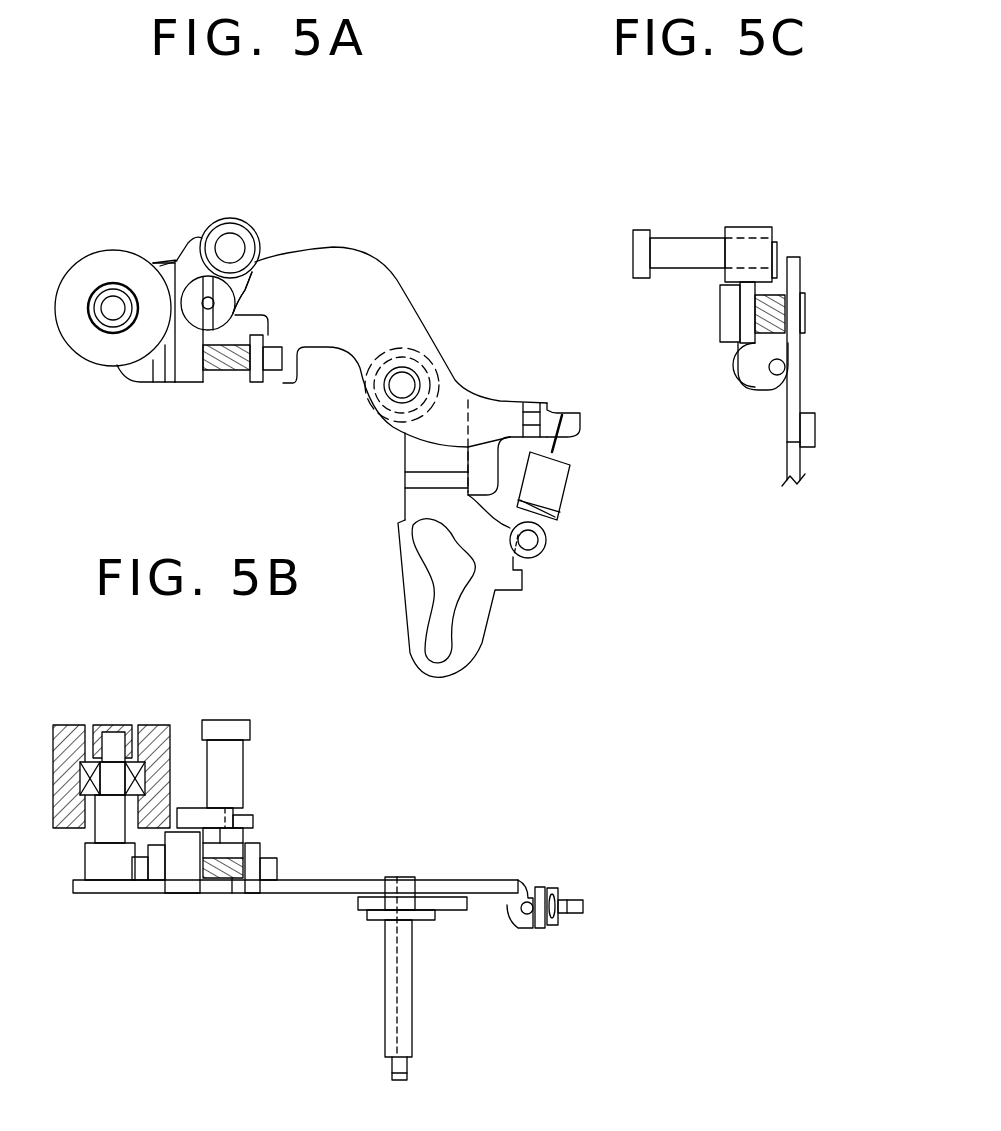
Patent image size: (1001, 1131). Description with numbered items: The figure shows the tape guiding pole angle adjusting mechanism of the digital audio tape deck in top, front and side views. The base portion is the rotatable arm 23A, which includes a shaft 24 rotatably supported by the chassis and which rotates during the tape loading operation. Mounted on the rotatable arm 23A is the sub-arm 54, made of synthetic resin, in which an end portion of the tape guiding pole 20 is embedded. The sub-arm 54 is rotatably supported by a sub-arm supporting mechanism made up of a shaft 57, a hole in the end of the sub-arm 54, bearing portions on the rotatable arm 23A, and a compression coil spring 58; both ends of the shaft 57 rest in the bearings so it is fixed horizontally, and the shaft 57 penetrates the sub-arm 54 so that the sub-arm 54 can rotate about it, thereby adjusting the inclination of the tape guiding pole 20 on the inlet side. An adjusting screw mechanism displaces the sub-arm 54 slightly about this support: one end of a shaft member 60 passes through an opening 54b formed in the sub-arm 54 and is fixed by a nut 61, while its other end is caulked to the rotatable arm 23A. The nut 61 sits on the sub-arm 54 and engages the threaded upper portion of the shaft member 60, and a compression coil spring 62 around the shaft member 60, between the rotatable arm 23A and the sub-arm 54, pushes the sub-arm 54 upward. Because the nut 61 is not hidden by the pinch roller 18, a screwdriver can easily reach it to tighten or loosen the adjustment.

In FIG. 5A, the pinch roller 18 is at (82, 273).
In FIG. 5B, the pinch roller 18 is at (70, 740).
In FIG. 5A, the tape guiding pole 20 is at (250, 220).
In FIG. 5B, the tape guiding pole 20 is at (240, 720).
In FIG. 5C, the tape guiding pole 20 is at (652, 218).
In FIG. 5A, the rotatable arm 23A is at (397, 280).
In FIG. 5B, the rotatable arm 23A is at (443, 880).
In FIG. 5C, the rotatable arm 23A is at (787, 457).
In FIG. 5B, the shaft 24 is at (402, 1017).
In FIG. 5A, the sub-arm 54 is at (188, 247).
In FIG. 5B, the sub-arm 54 is at (180, 880).
In FIG. 5C, the sub-arm 54 is at (748, 373).
In FIG. 5A, the opening 54b is at (172, 260).
In FIG. 5A, the shaft 57 is at (273, 358).
In FIG. 5B, the shaft 57 is at (268, 867).
In FIG. 5C, the shaft 57 is at (785, 367).
In FIG. 5A, the compression coil spring 58 is at (230, 367).
In FIG. 5B, the compression coil spring 58 is at (232, 883).
In FIG. 5A, the shaft member 60 is at (208, 310).
In FIG. 5C, the shaft member 60 is at (775, 250).
In FIG. 5A, the nut 61 is at (230, 298).
In FIG. 5B, the nut 61 is at (220, 813).
In FIG. 5C, the nut 61 is at (720, 332).
In FIG. 5C, the compression coil spring 62 is at (773, 307).